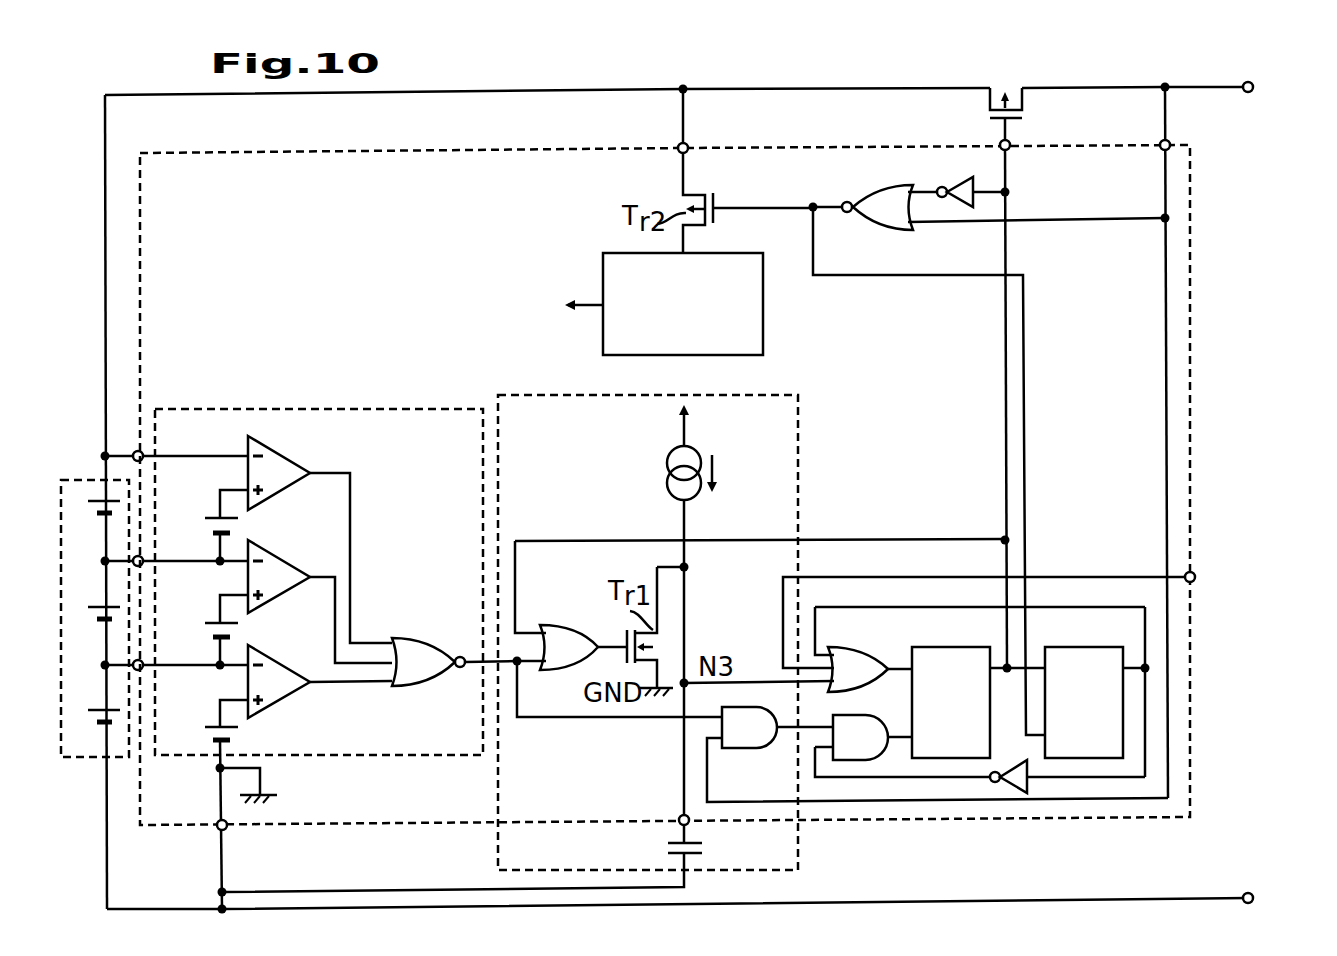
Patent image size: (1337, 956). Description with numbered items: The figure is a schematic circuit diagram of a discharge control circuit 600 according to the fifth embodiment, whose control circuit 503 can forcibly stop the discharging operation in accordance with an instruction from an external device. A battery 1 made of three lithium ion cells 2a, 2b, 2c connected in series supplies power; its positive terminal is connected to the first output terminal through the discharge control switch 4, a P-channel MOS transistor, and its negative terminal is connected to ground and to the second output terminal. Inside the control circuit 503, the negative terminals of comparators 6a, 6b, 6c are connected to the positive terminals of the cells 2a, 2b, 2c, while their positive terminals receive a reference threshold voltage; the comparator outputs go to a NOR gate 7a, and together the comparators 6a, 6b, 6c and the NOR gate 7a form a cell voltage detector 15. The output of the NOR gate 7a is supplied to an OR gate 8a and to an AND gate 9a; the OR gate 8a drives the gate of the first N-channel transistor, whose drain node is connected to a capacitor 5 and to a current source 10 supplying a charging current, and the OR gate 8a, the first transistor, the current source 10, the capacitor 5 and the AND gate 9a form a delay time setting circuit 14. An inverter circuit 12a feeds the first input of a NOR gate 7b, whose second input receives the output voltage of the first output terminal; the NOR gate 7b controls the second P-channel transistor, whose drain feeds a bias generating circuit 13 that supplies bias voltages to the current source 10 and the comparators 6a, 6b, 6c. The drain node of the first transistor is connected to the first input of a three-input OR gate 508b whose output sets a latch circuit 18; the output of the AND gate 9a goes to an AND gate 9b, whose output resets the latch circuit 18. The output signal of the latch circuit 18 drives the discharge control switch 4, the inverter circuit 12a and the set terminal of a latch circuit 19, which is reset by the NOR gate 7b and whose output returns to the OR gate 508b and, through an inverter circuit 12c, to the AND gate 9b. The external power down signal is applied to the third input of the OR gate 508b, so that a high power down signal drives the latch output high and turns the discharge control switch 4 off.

The discharge control circuit 600 is at (1218, 62).
The control circuit 503 is at (1192, 255).
The discharge control switch 4 is at (1024, 98).
The inverter circuit 12a is at (960, 178).
The NOR gate 7b is at (877, 230).
The bias generating circuit 13 is at (763, 340).
The delay time setting circuit 14 is at (798, 440).
The cell voltage detector 15 is at (418, 408).
The battery 1 is at (82, 478).
The cell 2a is at (96, 498).
The cell 2b is at (97, 607).
The cell 2c is at (97, 710).
The comparator 6a is at (291, 449).
The comparator 6b is at (291, 554).
The comparator 6c is at (291, 659).
The NOR gate 7a is at (433, 637).
The OR gate 8a is at (583, 624).
The current source 10 is at (667, 457).
The AND gate 9a is at (742, 750).
The capacitor 5 is at (698, 836).
The OR gate 508b is at (848, 645).
The latch circuit 18 is at (942, 636).
The latch circuit 19 is at (1077, 636).
The AND gate 9b is at (853, 714).
The inverter circuit 12c is at (1008, 792).